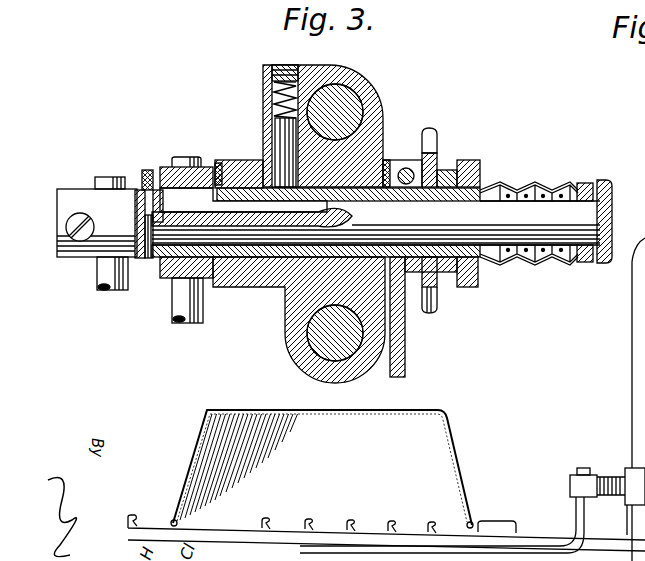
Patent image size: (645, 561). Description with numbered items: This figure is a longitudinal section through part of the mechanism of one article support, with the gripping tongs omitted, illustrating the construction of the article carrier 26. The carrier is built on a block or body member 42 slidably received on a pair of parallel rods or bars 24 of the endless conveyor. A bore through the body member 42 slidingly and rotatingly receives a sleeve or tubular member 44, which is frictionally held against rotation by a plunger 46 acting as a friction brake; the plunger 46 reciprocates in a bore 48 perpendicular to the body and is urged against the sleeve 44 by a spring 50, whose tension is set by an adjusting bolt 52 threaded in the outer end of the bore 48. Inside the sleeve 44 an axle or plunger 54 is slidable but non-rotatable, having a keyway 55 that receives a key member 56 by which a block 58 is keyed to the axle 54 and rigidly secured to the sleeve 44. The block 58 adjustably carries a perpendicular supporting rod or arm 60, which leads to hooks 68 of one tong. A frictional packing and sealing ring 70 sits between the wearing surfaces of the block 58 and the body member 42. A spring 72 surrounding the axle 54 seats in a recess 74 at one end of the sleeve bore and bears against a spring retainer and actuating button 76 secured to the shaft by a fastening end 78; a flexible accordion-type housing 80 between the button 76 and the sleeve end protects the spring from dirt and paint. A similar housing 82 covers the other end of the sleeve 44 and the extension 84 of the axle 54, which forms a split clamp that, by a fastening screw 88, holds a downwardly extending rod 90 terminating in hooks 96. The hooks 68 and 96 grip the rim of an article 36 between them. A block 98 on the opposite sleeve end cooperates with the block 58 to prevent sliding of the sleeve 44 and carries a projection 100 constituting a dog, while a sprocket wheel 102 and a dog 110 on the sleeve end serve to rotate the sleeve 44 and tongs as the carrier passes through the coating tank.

The rods or bars 24 is at (343, 102).
The article carrier 26 is at (411, 120).
The article 36 is at (450, 440).
The body member 42 is at (302, 295).
The sleeve 44 is at (240, 197).
The plunger 46 is at (283, 150).
The bore 48 is at (272, 97).
The spring 50 is at (272, 74).
The adjusting bolt 52 is at (290, 68).
The axle or plunger 54 is at (482, 217).
The keyway 55 is at (204, 236).
The key member 56 is at (158, 178).
The block 58 is at (165, 167).
The supporting rod or arm 60 is at (177, 300).
The hooks 68 is at (390, 520).
The packing and sealing ring 70 is at (213, 168).
The spring 72 is at (537, 182).
The recess 74 is at (434, 272).
The spring retainer and actuating button 76 is at (583, 183).
The fastening end 78 is at (598, 186).
The accordion-type housing 80 is at (548, 265).
The housing 82 is at (140, 172).
The extension 84 is at (76, 186).
The fastening screw 88 is at (66, 222).
The rod 90 is at (100, 275).
The hooks 96 is at (137, 517).
The block 98 is at (412, 288).
The arm or projection 100 is at (407, 363).
The sprocket wheel 102 is at (435, 158).
The dog 110 is at (469, 160).